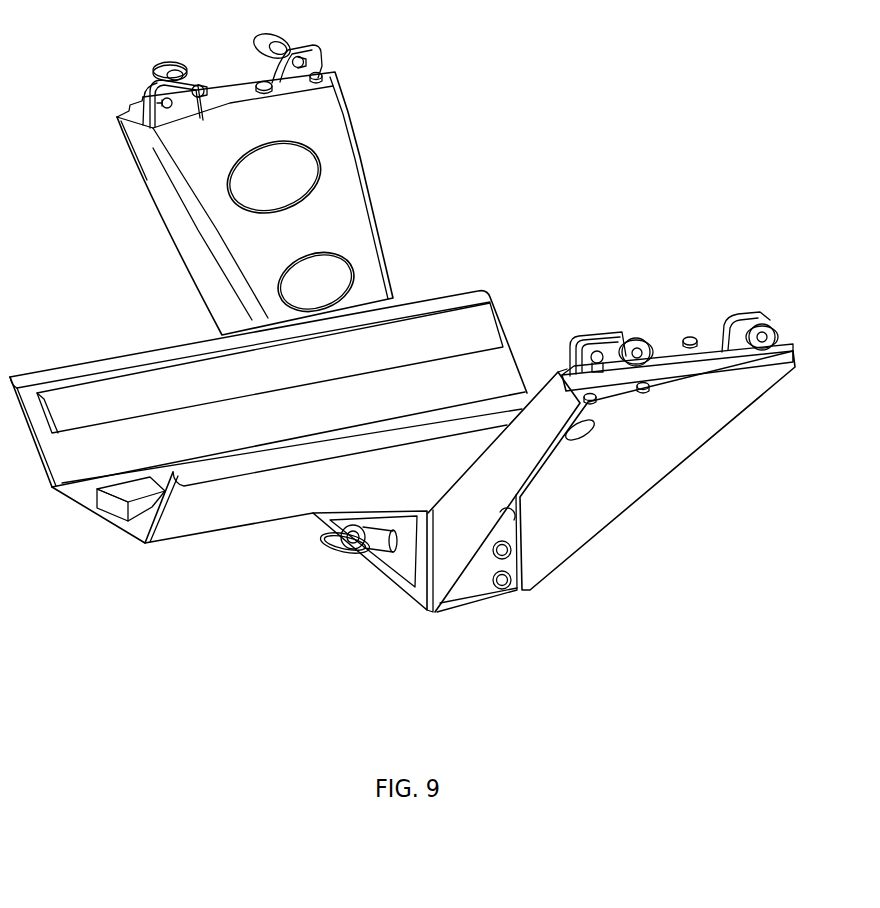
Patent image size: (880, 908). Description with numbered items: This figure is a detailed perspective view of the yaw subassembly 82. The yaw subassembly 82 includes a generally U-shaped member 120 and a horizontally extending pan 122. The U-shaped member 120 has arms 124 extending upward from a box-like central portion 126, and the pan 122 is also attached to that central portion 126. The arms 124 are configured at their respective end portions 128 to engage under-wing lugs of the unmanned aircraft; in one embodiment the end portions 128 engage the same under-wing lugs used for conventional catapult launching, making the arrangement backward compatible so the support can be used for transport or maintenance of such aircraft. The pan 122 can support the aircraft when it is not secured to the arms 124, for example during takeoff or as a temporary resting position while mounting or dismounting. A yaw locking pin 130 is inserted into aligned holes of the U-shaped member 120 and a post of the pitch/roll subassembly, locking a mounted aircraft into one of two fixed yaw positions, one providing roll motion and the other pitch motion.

The yaw subassembly 82 is at (146, 628).
The U-shaped member 120 is at (563, 567).
The pan 122 is at (127, 352).
The arms 124 is at (368, 182).
The central portion 126 is at (400, 594).
The end portions 128 is at (335, 57).
The yaw locking pin 130 is at (350, 567).